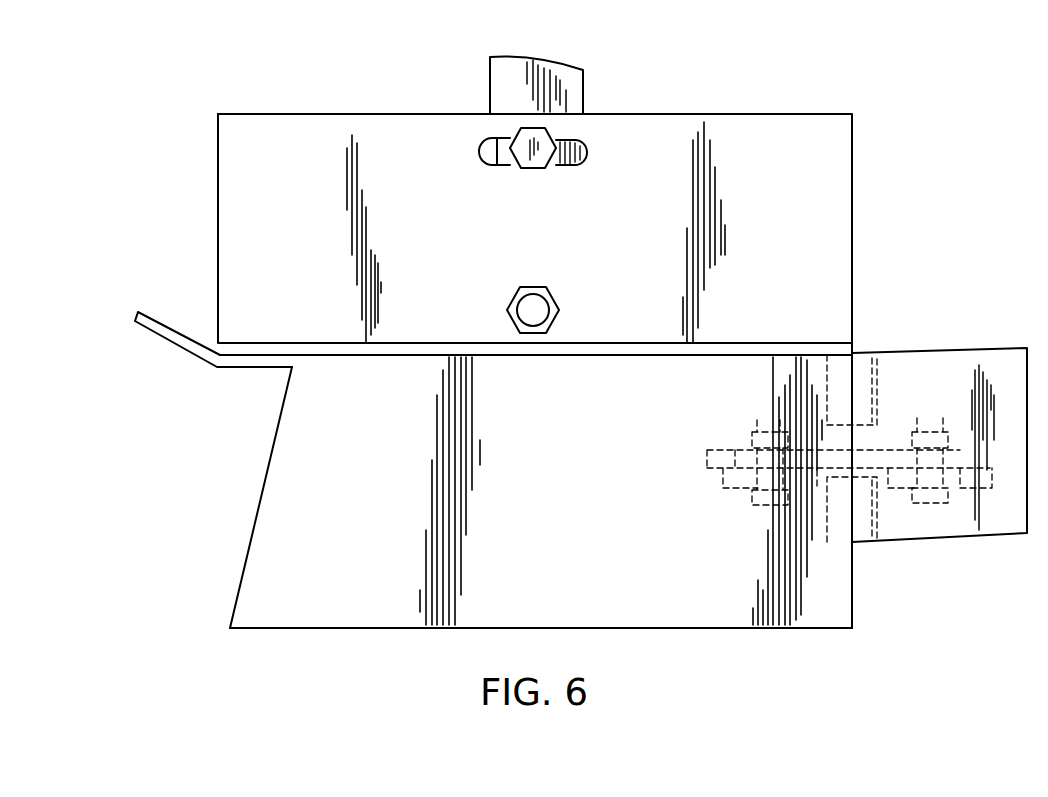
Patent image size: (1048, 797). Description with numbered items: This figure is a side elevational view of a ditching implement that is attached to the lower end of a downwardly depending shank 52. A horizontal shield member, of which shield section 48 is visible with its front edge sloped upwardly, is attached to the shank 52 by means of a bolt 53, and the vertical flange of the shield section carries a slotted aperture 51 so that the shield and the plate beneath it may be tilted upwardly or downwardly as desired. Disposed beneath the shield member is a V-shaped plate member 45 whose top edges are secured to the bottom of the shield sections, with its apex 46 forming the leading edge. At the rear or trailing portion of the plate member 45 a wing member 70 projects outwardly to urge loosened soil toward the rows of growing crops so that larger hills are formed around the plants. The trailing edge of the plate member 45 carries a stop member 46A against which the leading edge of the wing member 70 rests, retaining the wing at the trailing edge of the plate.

The V-shaped plate member 45 is at (276, 546).
The apex 46 is at (266, 465).
The stop member 46A is at (877, 380).
The shield section 48 is at (152, 330).
The slotted aperture 51 is at (488, 143).
The shank 52 is at (513, 63).
The bolt 53 is at (565, 166).
The wing member 70 is at (983, 508).